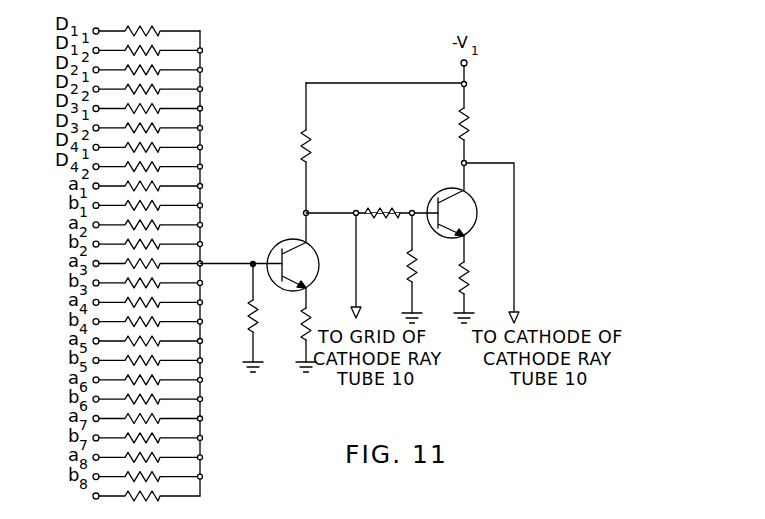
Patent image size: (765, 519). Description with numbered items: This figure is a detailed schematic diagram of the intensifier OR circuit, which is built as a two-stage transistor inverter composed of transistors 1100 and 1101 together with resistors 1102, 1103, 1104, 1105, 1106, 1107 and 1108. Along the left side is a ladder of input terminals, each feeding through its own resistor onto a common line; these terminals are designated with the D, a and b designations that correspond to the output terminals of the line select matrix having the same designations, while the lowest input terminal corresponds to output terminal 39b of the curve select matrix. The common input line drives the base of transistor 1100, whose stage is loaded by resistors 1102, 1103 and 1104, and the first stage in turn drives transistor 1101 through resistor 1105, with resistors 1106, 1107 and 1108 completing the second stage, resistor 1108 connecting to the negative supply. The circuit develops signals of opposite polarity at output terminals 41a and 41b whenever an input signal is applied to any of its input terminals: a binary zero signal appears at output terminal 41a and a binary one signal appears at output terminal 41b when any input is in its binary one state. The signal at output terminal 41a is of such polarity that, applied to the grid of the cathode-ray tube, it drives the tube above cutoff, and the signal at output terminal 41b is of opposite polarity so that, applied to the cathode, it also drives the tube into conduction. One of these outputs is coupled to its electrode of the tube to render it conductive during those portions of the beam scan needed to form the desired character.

The transistor 1100 is at (279, 246).
The transistor 1101 is at (450, 188).
The resistor 1102 is at (250, 312).
The resistor 1103 is at (301, 324).
The resistor 1104 is at (303, 144).
The resistor 1105 is at (385, 199).
The resistor 1106 is at (409, 262).
The resistor 1107 is at (461, 274).
The resistor 1108 is at (468, 119).
The output terminal 41a is at (354, 211).
The output terminal 41b is at (467, 161).
The output terminal of curve select matrix 39b is at (127, 501).